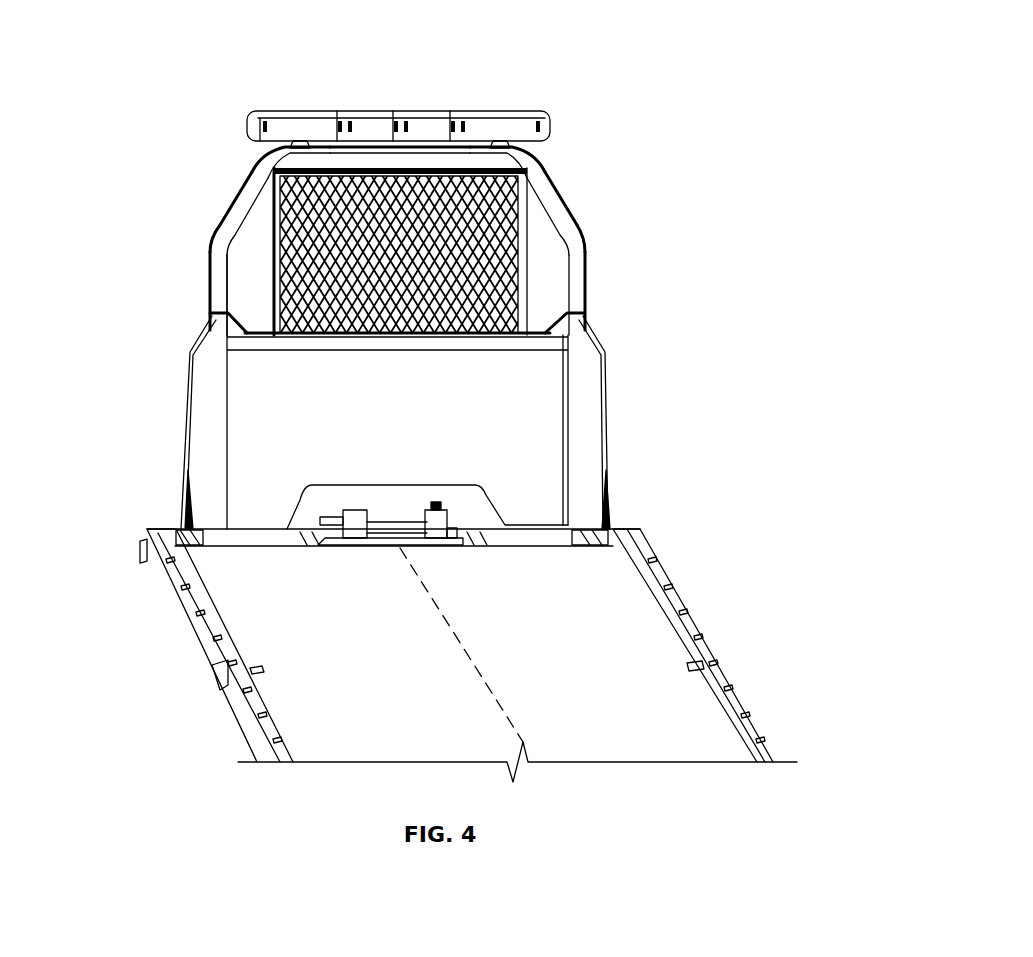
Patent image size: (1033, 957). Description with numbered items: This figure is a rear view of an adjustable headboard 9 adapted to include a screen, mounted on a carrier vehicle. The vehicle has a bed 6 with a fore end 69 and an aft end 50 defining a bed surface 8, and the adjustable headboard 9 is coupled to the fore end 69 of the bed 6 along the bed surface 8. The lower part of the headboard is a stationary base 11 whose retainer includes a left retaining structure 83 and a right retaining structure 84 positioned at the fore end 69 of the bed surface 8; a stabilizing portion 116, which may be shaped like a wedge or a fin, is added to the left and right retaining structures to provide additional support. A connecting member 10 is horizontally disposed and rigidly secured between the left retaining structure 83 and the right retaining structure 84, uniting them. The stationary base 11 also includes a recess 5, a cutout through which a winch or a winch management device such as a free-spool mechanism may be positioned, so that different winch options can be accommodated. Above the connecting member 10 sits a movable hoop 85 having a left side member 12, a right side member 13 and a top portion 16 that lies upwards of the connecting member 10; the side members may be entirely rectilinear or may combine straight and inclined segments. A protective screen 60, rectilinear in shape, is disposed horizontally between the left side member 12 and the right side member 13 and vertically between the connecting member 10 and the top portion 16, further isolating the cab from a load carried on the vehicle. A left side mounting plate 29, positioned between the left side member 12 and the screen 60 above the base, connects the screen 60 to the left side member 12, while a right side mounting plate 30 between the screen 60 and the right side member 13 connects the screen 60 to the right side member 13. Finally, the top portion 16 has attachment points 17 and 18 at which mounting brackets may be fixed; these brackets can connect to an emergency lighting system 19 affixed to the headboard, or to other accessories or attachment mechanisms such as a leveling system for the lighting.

The recess 5 is at (305, 548).
The bed 6 is at (702, 594).
The bed surface 8 is at (492, 698).
The adjustable headboard 9 is at (588, 277).
The connecting member 10 is at (545, 338).
The stationary base 11 is at (620, 360).
The left side member 12 is at (210, 268).
The right side member 13 is at (585, 245).
The top portion 16 is at (378, 148).
The attachment point 17 is at (262, 149).
The attachment point 18 is at (510, 148).
The emergency lighting system 19 is at (519, 111).
The left side mounting plate 29 is at (247, 285).
The right side mounting plate 30 is at (548, 220).
The aft end 50 is at (596, 765).
The screen 60 is at (524, 250).
The fore end 69 is at (563, 548).
The left retaining structure 83 is at (183, 420).
The right retaining structure 84 is at (606, 422).
The movable hoop 85 is at (218, 220).
The stabilizing portion 116 is at (182, 497).